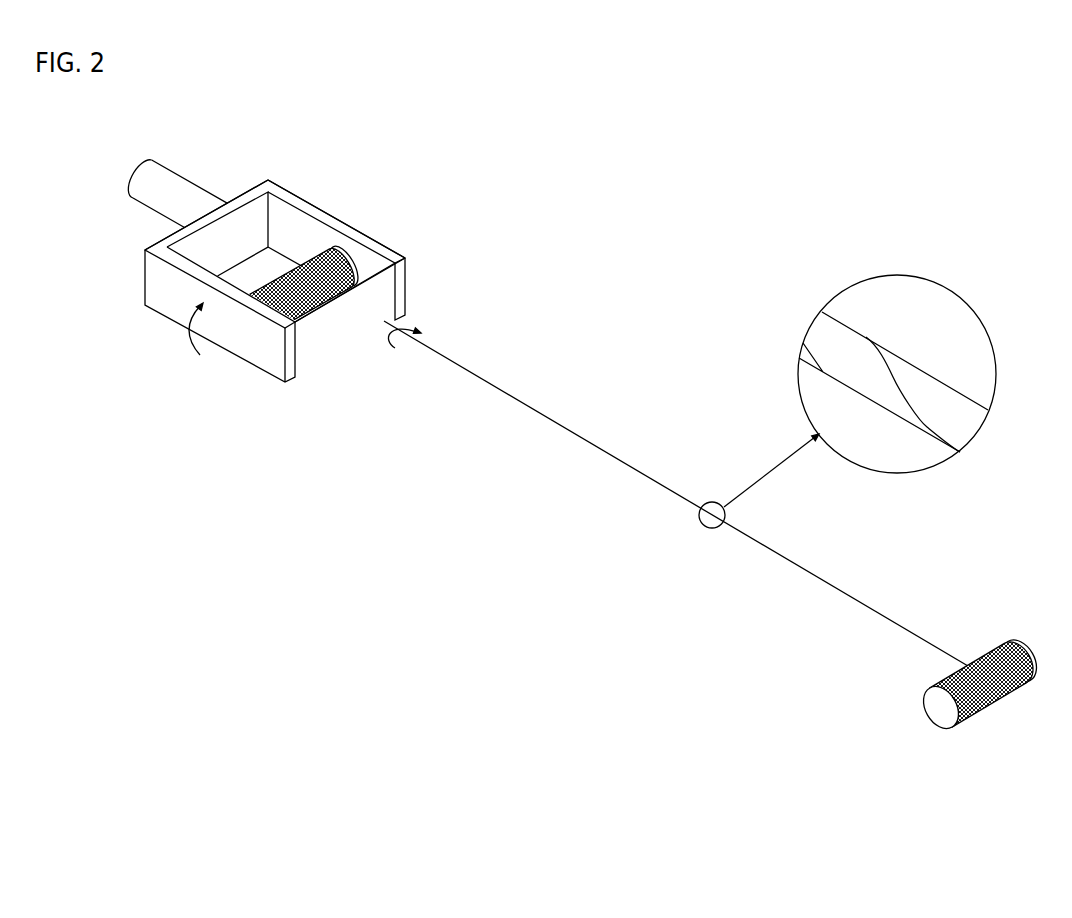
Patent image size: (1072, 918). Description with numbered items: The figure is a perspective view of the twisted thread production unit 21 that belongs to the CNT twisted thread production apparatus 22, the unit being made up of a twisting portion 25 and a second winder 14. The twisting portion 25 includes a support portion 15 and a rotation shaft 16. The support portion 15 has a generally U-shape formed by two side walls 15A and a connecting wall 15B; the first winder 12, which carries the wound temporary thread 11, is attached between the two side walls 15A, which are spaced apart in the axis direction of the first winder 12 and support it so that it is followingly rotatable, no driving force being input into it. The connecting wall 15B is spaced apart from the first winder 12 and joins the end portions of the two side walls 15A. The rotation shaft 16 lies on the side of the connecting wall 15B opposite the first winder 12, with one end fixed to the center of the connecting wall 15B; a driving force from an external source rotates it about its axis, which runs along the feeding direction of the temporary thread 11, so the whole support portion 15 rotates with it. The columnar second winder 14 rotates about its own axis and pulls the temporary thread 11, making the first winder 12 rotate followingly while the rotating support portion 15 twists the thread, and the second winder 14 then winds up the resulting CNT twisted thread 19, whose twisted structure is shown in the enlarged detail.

The temporary thread 11 is at (310, 256).
The first winder 12 is at (353, 262).
The second winder 14 is at (935, 709).
The support portion 15 is at (312, 300).
The side walls 15A is at (402, 287).
The connecting wall 15B is at (238, 218).
The rotation shaft 16 is at (157, 200).
The CNT twisted thread 19 is at (567, 432).
The twisted thread production unit 21 is at (458, 759).
The CNT twisted thread production apparatus 22 is at (490, 770).
The twisting portion 25 is at (270, 162).